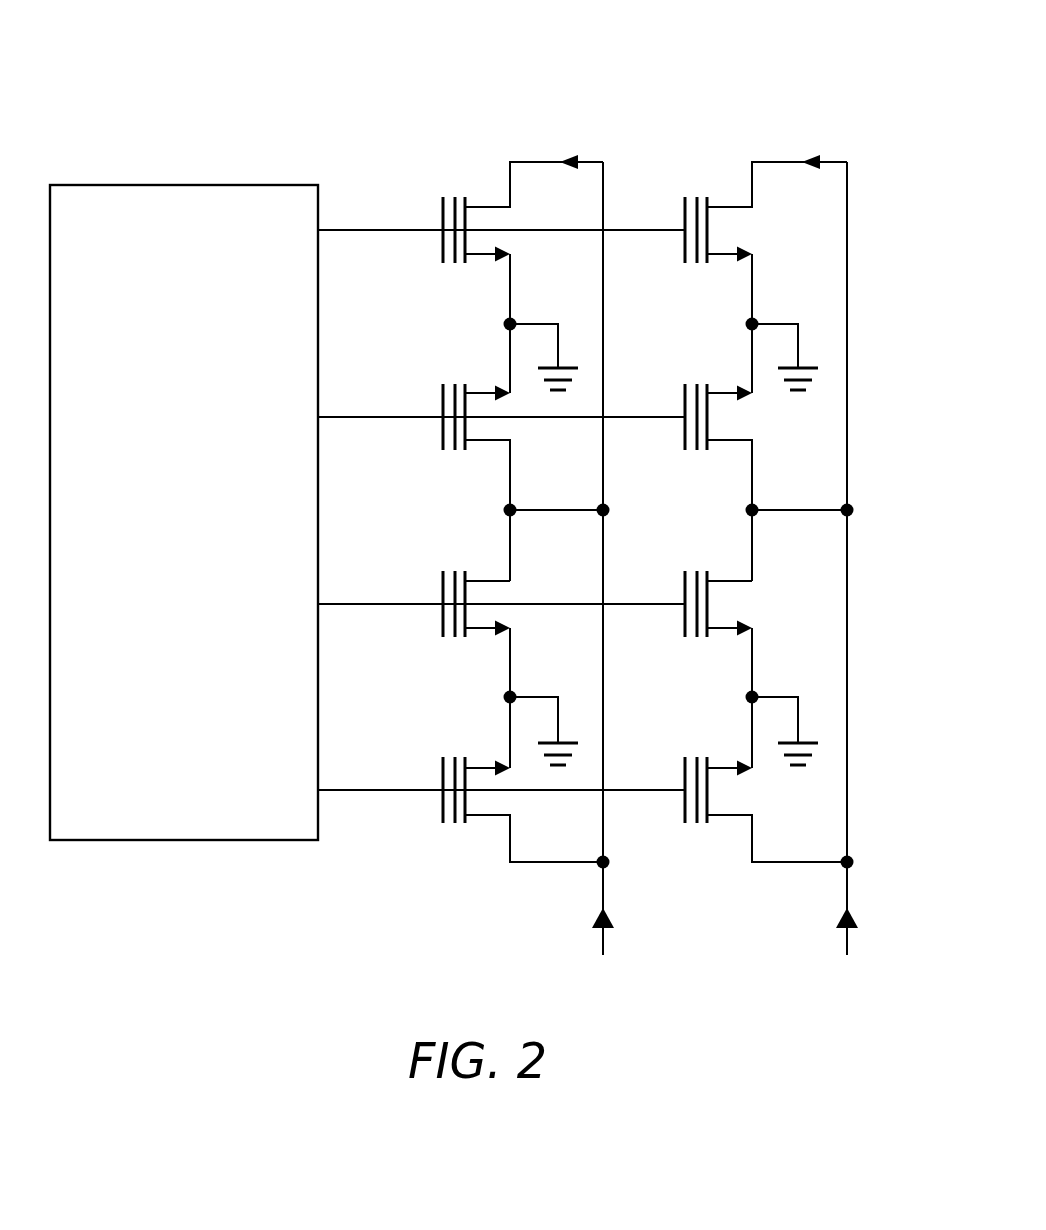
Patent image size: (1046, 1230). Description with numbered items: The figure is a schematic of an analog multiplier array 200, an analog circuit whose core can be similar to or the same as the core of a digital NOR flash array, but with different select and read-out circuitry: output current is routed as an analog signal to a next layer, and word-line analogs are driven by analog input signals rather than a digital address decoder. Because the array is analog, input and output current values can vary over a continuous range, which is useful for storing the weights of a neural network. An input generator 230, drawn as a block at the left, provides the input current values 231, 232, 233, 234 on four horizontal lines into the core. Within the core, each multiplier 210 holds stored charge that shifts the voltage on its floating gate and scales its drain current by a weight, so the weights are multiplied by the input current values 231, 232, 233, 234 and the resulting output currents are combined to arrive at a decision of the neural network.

The analog multiplier array 200 is at (745, 72).
The multiplier 210 is at (472, 162).
The input generator 230 is at (157, 860).
The input current value 231 is at (394, 195).
The input current value 232 is at (394, 382).
The input current value 233 is at (394, 570).
The input current value 234 is at (394, 757).